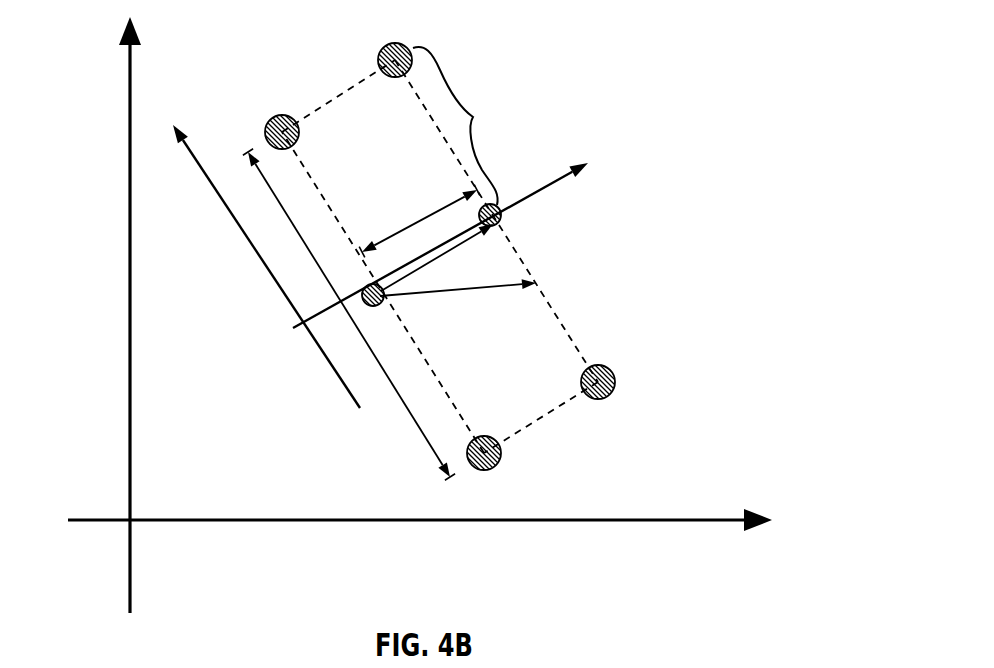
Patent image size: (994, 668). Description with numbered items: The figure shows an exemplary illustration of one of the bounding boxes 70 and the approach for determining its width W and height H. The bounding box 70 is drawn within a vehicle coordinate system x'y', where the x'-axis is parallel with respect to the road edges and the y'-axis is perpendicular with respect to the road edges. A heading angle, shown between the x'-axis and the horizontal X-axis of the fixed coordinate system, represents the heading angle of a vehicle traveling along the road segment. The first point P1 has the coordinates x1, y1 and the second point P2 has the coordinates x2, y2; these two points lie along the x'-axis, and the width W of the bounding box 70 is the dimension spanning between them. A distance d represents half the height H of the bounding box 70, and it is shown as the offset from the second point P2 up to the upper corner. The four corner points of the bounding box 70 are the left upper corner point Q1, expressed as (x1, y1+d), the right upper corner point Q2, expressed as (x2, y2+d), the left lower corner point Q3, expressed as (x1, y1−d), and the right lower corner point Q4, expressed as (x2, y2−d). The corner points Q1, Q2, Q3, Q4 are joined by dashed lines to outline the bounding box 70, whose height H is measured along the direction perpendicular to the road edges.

The bounding box 70 is at (746, 34).
The left upper corner point Q1 is at (271, 119).
The right upper corner point Q2 is at (386, 46).
The left lower corner point Q3 is at (494, 469).
The right lower corner point Q4 is at (609, 397).
The first point P1 is at (372, 305).
The second point P2 is at (501, 212).
The width W is at (405, 229).
The height H is at (423, 435).
The distance d is at (473, 117).